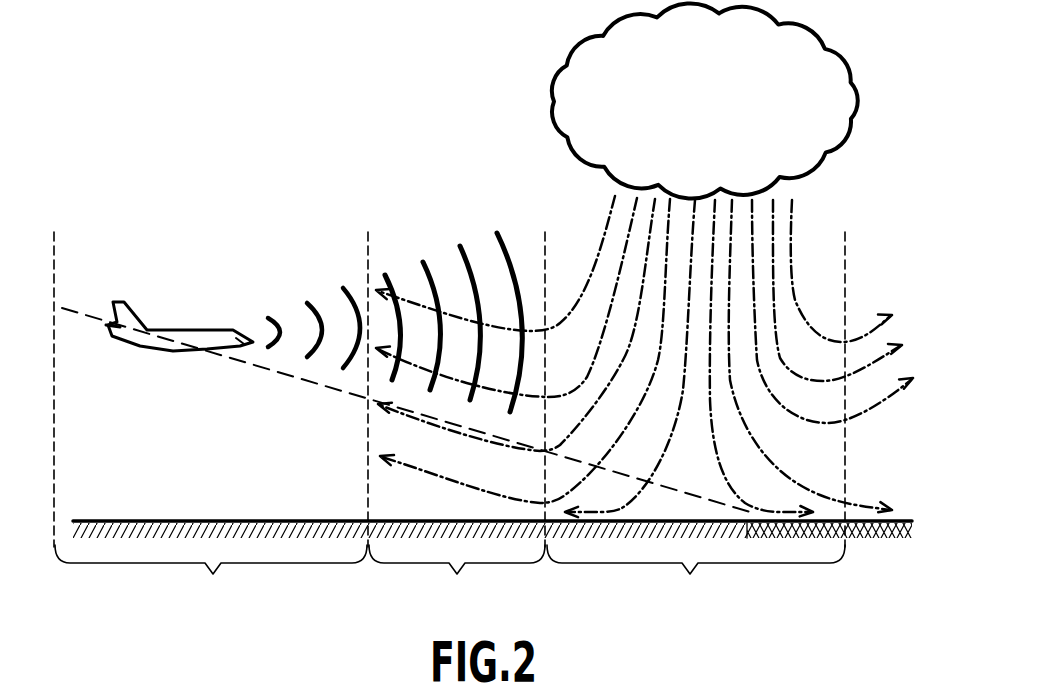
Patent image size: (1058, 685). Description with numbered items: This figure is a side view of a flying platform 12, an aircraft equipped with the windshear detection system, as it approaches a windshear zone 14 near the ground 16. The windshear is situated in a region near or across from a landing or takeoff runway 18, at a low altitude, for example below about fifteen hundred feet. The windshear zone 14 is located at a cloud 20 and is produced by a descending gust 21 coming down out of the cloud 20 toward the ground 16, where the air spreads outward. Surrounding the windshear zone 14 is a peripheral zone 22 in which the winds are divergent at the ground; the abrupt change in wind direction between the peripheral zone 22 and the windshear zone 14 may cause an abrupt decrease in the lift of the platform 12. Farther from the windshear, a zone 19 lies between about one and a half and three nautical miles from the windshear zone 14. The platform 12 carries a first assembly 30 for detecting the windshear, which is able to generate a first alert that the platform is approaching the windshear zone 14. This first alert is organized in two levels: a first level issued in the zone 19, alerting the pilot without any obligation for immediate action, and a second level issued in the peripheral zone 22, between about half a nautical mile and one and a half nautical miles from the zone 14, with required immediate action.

The flying platform 12 is at (188, 336).
The first assembly for detecting the windshear 30 is at (237, 340).
The ground 16 is at (120, 519).
The landing or takeoff runway 18 is at (903, 519).
The zone 19 is at (211, 421).
The peripheral zone 22 is at (457, 422).
The windshear zone 14 is at (695, 421).
The cloud 20 is at (563, 88).
The descending gust 21 is at (607, 223).